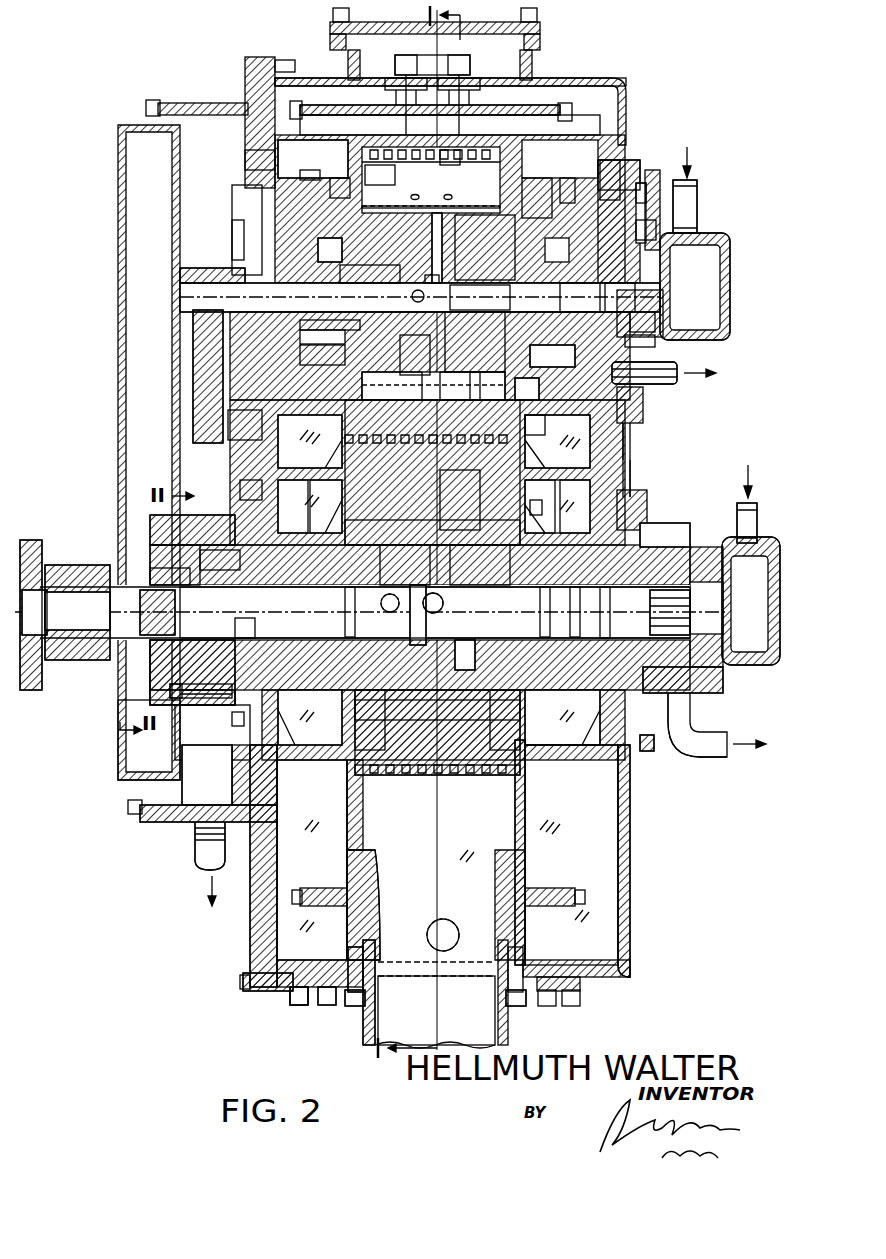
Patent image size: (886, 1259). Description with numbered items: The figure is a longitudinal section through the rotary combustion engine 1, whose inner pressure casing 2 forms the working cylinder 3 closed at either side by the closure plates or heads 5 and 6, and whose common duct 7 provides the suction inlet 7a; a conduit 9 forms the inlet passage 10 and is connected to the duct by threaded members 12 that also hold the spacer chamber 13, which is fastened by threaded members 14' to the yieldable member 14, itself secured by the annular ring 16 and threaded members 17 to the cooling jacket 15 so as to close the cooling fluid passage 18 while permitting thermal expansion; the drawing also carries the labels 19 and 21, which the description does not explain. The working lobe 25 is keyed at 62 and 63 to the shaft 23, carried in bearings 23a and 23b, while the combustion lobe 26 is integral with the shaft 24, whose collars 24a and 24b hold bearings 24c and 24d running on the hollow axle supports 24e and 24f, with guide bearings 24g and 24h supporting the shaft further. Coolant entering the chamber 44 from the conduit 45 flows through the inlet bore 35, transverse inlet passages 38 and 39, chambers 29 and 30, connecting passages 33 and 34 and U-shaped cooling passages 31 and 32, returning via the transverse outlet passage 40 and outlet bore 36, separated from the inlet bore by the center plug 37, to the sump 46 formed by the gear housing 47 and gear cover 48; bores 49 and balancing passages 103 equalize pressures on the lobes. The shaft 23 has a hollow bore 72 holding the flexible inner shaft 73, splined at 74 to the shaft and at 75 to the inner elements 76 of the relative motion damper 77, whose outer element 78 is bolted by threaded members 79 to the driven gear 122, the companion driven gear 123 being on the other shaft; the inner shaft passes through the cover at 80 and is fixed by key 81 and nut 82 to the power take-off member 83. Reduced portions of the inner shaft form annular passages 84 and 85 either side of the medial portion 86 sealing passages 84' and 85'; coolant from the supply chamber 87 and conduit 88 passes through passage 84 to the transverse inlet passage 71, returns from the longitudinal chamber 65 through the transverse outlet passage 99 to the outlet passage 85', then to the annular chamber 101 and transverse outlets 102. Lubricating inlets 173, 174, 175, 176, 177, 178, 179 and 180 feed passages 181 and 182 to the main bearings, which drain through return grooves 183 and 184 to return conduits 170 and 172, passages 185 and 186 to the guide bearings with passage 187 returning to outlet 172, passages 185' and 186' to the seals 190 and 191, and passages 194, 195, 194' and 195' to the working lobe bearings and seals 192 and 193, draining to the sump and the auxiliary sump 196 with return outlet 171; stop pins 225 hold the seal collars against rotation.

The rotary combustion engine 1 is at (634, 830).
The inner pressure casing 2 is at (500, 104).
The working chamber or cylinder 3 is at (502, 800).
The closure plate or head 5 is at (526, 440).
The closure plate or head 6 is at (352, 160).
The common duct 7 is at (528, 824).
The suction inlet 7a is at (432, 868).
The conduit 9 is at (360, 1024).
The inlet passage 10 is at (380, 1014).
The threaded members 12 is at (366, 988).
The spacer chamber 13 is at (372, 975).
The yieldable member 14 is at (312, 966).
The threaded members 14' is at (321, 1011).
The cooling jacket 15 is at (258, 926).
The annular ring 16 is at (290, 995).
The threaded members 17 is at (298, 1008).
The cooling fluid passage 18 is at (300, 868).
The pin 19 is at (448, 935).
The bolts 21 is at (436, 68).
The shaft 23 is at (534, 504).
The bearing 23a is at (645, 612).
The bearing 23b is at (395, 612).
The shaft 24 is at (340, 297).
The annular collar 24a is at (550, 215).
The annular collar 24b is at (345, 185).
The annular bearing 24c is at (583, 297).
The annular bearing 24d is at (322, 244).
The hollow axle support structure 24e is at (628, 172).
The hollow axle support structure 24f is at (258, 228).
The guide bearing 24g is at (650, 322).
The guide bearing 24h is at (255, 266).
The working lobe 25 is at (462, 785).
The combustion lobe 26 is at (528, 392).
The axial chamber 29 is at (470, 216).
The axial chamber 30 is at (450, 372).
The U-shaped cooling passage 31 is at (478, 170).
The U-shaped cooling passage 32 is at (462, 376).
The connecting passage 33 is at (400, 170).
The connecting passage 34 is at (395, 380).
The inlet bore 35 is at (462, 292).
The outlet bore 36 is at (380, 282).
The center plug or section 37 is at (428, 278).
The transverse inlet passage 38 is at (442, 238).
The transverse inlet passage 39 is at (411, 355).
The transverse outlet passage 40 is at (412, 300).
The chamber 44 is at (712, 272).
The conduit 45 is at (698, 214).
The sump 46 is at (192, 792).
The gear housing 47 is at (232, 805).
The gear cover 48 is at (134, 766).
The pressure equalizing bore 49 is at (488, 215).
The key 62 is at (437, 719).
The key 63 is at (432, 472).
The longitudinal chamber 65 is at (452, 530).
The transverse inlet passage 71 is at (444, 601).
The hollow bore 72 is at (480, 640).
The inner shaft 73 is at (486, 585).
The spline 74 is at (680, 600).
The spline 75 is at (152, 582).
The annular inner element 76 is at (172, 650).
The relative motion damper 77 is at (146, 550).
The outer annular element 78 is at (158, 705).
The threaded members 79 is at (205, 688).
The gear cover passage 80 is at (160, 592).
The key 81 is at (90, 640).
The nut 82 is at (48, 640).
The power take-off member 83 is at (34, 545).
The annular passage 84 is at (533, 612).
The annular passage 84' is at (565, 612).
The annular passage 85 is at (352, 608).
The annular outlet passage 85' is at (349, 612).
The medial portion 86 is at (412, 585).
The fluid cooling supply chamber 87 is at (748, 640).
The conduit 88 is at (750, 524).
The transverse outlet passage 99 is at (416, 632).
The annular chamber 101 is at (178, 612).
The transverse outlet 102 is at (246, 632).
The balancing passage 103 is at (395, 545).
The driven gear 122 is at (176, 528).
The driven gear 123 is at (204, 362).
The lubricant return conduit 170 is at (202, 846).
The return outlet 171 is at (700, 748).
The lubricant return conduit 172 is at (655, 384).
The lubricating inlet 173 is at (246, 165).
The lubricating inlet 174 is at (246, 422).
The lubricating inlet 175 is at (252, 500).
The lubricating inlet 176 is at (244, 716).
The lubricating inlet 177 is at (660, 177).
The lubricating inlet 178 is at (628, 428).
The lubricating inlet 179 is at (630, 490).
The lubricating inlet 180 is at (646, 724).
The passage 181 is at (625, 297).
The passage 182 is at (312, 328).
The return groove 183 is at (552, 354).
The return groove 184 is at (322, 353).
The passage 185 is at (222, 240).
The passage 185' is at (421, 140).
The passage 186 is at (651, 218).
The passage 186' is at (602, 153).
The communicating passage 187 is at (636, 340).
The sealing structure 190 is at (308, 172).
The sealing structure 191 is at (570, 205).
The sealing structure 192 is at (326, 540).
The sealing structure 193 is at (542, 506).
The passage 194 is at (218, 555).
The communicating passage 194' is at (300, 506).
The passage 195 is at (667, 536).
The communicating passage 195' is at (578, 506).
The auxiliary sump 196 is at (706, 680).
The stop pin 225 is at (439, 580).